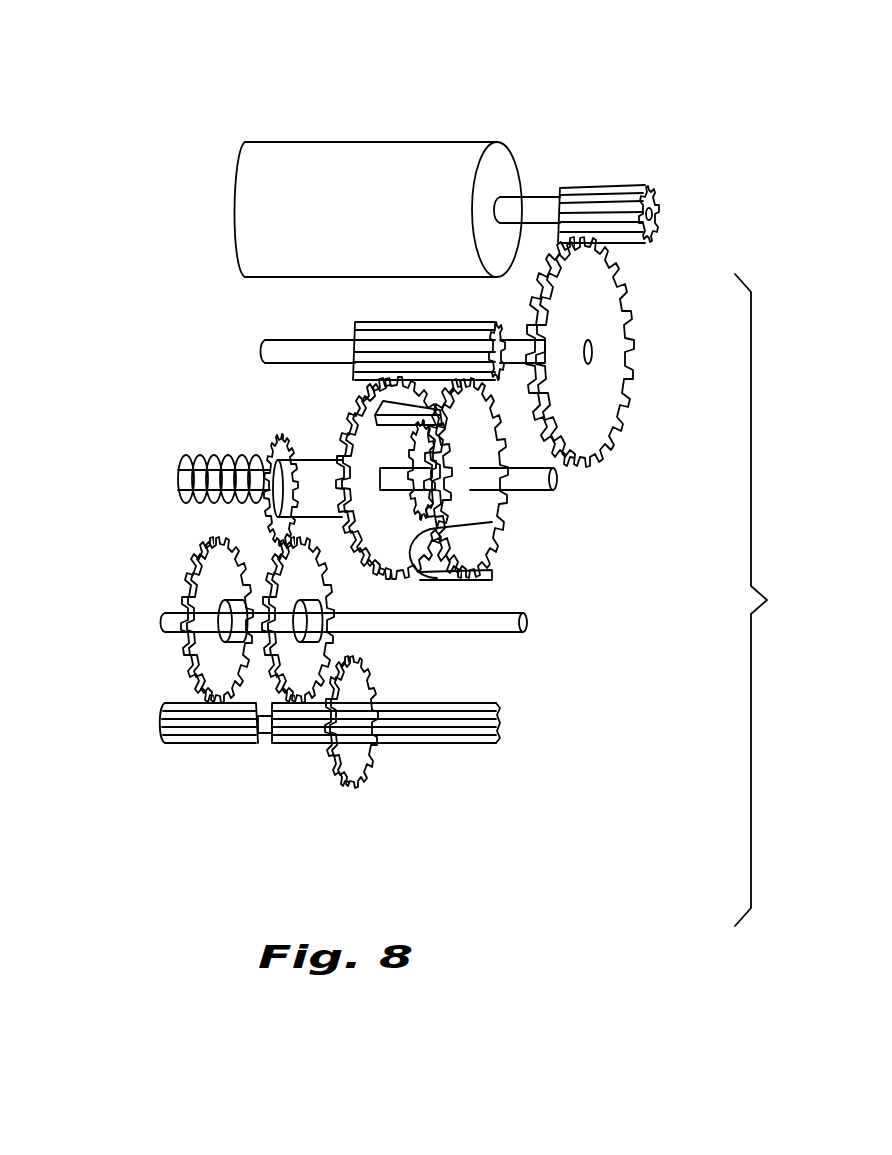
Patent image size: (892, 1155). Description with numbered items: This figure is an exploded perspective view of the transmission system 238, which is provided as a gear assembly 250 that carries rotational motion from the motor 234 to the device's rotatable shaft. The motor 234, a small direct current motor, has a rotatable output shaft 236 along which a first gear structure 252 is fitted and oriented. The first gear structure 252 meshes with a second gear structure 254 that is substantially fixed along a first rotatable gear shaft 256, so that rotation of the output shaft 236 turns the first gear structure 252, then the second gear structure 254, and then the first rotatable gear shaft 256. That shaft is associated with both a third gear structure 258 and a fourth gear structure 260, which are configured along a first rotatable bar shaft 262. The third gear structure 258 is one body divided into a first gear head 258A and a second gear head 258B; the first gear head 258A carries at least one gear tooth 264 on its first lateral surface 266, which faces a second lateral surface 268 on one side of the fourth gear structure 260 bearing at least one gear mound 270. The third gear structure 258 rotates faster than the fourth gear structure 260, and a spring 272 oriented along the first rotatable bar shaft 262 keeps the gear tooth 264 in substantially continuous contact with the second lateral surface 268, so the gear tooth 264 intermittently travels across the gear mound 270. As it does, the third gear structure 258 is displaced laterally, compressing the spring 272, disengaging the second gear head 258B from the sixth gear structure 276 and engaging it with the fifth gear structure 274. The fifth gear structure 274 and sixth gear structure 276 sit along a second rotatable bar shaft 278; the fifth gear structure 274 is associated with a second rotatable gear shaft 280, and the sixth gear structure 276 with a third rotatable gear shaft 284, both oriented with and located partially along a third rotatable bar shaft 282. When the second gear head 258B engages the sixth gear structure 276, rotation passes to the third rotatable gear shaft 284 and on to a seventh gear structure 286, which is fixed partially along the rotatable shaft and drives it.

The motor 234 is at (310, 195).
The rotatable output shaft 236 is at (535, 207).
The transmission system 238 is at (320, 94).
The gear assembly 250 is at (775, 600).
The first gear structure 252 is at (640, 185).
The second gear structure 254 is at (592, 305).
The first rotatable gear shaft 256 is at (385, 325).
The third gear structure 258 is at (318, 477).
The first gear head 258A is at (400, 563).
The second gear head 258B is at (262, 512).
The fourth gear structure 260 is at (480, 450).
The first rotatable bar shaft 262 is at (528, 478).
The gear tooth 264 is at (370, 413).
The first lateral surface 266 is at (406, 532).
The second lateral surface 268 is at (432, 557).
The gear mound 270 is at (477, 578).
The spring 272 is at (178, 485).
The fifth gear structure 274 is at (190, 630).
The sixth gear structure 276 is at (257, 653).
The second rotatable bar shaft 278 is at (383, 622).
The second rotatable gear shaft 280 is at (195, 705).
The third rotatable bar shaft 282 is at (263, 730).
The third rotatable gear shaft 284 is at (320, 742).
The seventh gear structure 286 is at (362, 755).